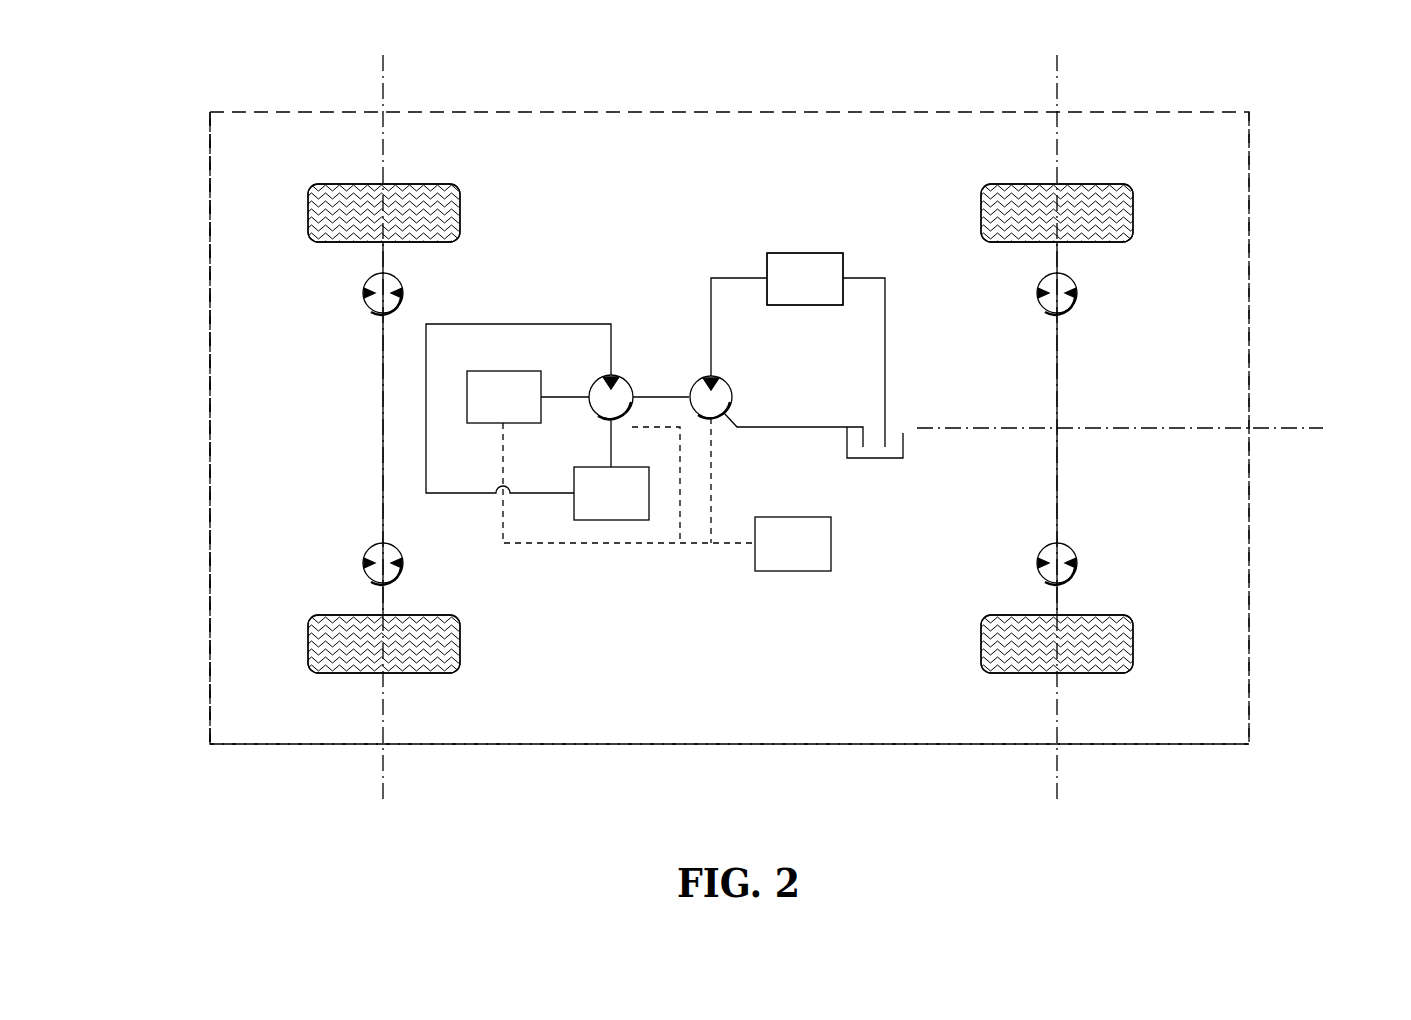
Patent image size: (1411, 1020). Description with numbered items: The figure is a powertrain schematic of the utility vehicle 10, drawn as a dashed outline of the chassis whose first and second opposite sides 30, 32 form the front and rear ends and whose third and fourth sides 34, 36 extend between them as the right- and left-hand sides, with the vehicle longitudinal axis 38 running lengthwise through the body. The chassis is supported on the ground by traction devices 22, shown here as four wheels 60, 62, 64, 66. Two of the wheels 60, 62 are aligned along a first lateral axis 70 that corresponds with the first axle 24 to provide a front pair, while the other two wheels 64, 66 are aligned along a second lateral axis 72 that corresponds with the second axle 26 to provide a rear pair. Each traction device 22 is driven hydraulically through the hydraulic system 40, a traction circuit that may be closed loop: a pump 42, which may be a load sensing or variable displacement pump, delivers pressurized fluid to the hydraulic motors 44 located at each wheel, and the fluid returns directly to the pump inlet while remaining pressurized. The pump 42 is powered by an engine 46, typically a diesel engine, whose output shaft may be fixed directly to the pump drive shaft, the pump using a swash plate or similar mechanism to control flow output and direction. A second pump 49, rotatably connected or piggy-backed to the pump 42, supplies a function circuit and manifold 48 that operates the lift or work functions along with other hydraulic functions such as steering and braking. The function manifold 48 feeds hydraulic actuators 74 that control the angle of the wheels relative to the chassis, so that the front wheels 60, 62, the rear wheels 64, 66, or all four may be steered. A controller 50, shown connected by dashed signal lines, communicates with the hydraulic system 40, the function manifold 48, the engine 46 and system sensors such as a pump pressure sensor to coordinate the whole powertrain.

The vehicle 10 is at (631, 795).
The traction devices 22 is at (720, 428).
The first axle 24 is at (381, 455).
The second axle 26 is at (1055, 388).
The first side 30 is at (185, 440).
The second side 32 is at (1282, 562).
The third side 34 is at (622, 78).
The fourth side 36 is at (556, 765).
The vehicle longitudinal axis 38 is at (1305, 426).
The hydraulic system 40 is at (626, 507).
The pump 42 is at (627, 380).
The hydraulic motors 44 is at (363, 293).
The engine 46 is at (516, 410).
The function manifold 48 is at (805, 279).
The pump 49 is at (727, 380).
The controller 50 is at (806, 557).
The wheel 60 is at (460, 643).
The wheel 62 is at (460, 213).
The wheel 64 is at (1133, 643).
The wheel 66 is at (1133, 213).
The first lateral axis 70 is at (381, 785).
The second axle end 72 is at (1059, 785).
The hydraulic actuators 74 is at (832, 292).